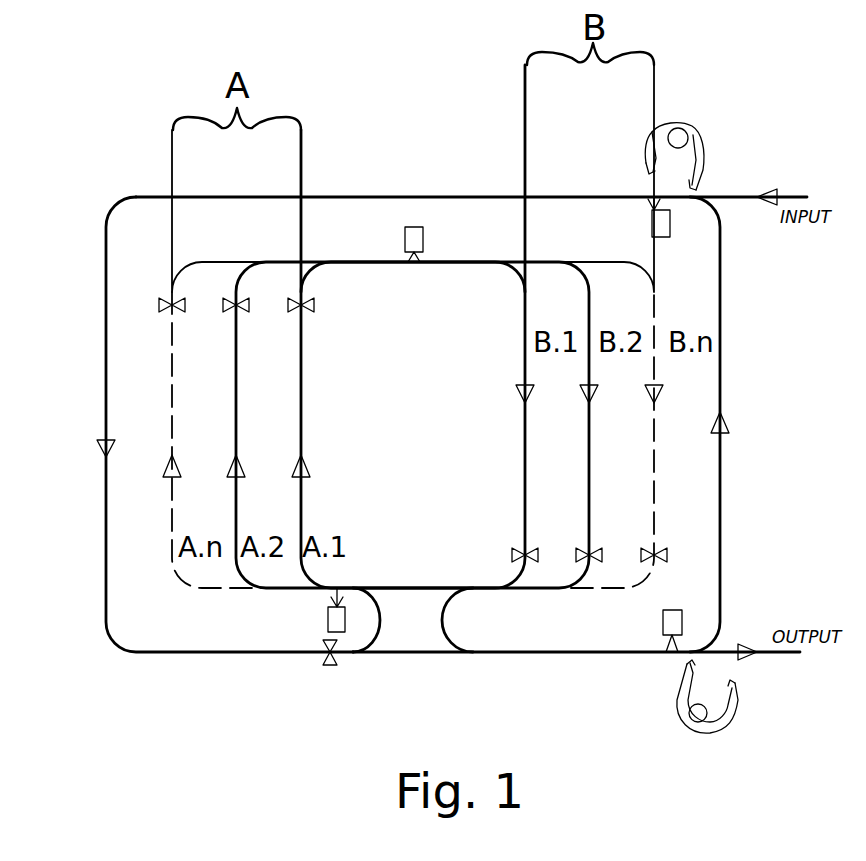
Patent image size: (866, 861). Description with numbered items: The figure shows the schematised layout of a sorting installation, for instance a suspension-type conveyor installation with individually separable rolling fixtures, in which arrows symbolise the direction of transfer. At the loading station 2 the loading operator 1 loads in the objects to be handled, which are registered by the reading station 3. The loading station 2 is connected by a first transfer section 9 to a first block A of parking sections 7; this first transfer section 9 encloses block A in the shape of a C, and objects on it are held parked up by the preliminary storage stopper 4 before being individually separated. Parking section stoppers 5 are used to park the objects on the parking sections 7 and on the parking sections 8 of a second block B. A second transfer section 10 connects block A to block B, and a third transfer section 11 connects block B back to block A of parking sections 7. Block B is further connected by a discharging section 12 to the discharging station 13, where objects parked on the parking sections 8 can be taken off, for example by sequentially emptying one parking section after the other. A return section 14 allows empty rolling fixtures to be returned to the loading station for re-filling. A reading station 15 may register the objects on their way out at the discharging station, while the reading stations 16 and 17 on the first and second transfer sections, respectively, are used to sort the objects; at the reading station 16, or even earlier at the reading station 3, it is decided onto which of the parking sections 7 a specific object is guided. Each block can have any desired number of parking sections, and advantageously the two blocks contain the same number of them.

The loading operator 1 is at (692, 125).
The loading station 2 is at (630, 134).
The reading station 3 is at (660, 222).
The preliminary storage stopper 4 is at (322, 655).
The parking section stoppers 5 is at (316, 303).
The parking sections 7 is at (300, 405).
The parking sections 8 is at (528, 376).
The first transfer section 9 is at (423, 197).
The second transfer section 10 is at (463, 262).
The third transfer section 11 is at (420, 589).
The discharging section 12 is at (443, 615).
The discharging station 13 is at (662, 688).
The return section 14 is at (720, 270).
The reading station 15 is at (682, 618).
The reading station 16 is at (328, 612).
The reading station 17 is at (403, 238).